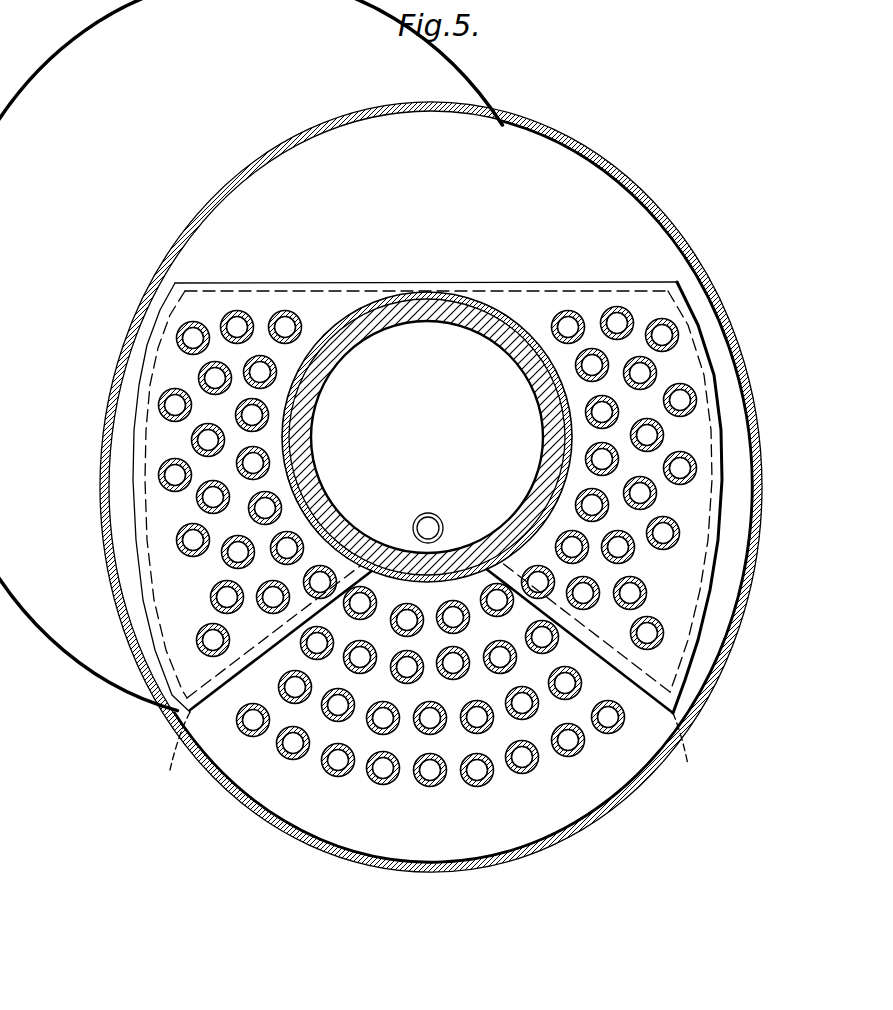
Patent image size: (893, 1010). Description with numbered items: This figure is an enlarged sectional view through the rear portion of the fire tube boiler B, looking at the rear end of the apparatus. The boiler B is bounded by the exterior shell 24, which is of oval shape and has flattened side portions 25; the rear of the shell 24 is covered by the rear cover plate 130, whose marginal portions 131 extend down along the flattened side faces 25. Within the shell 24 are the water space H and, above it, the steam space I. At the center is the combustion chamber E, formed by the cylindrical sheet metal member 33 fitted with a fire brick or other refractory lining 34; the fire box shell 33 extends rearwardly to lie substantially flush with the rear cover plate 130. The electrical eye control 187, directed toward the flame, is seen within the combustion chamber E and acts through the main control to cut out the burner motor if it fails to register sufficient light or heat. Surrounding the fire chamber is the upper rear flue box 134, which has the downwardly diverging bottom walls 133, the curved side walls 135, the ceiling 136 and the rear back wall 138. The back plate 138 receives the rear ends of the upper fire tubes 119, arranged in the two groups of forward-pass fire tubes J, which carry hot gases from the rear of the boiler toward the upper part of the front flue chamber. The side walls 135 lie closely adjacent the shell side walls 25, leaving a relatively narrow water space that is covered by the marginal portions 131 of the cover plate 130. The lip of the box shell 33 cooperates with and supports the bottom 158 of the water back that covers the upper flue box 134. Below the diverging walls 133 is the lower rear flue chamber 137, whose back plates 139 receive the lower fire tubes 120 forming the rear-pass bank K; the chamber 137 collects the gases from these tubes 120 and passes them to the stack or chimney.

The exterior shell 24 is at (229, 180).
The flattened side portions 25 is at (503, 136).
The rear cover plate 130 is at (550, 147).
The ceiling 136 is at (481, 283).
The curved side walls 135 is at (722, 417).
The marginal portions 131 is at (737, 487).
The upper rear flue box 134 is at (700, 527).
The downwardly diverging bottom walls 133 is at (207, 694).
The bottom of the water back 158 is at (175, 760).
The cylindrical sheet metal member 33 is at (560, 387).
The rear back wall 138 is at (583, 433).
The refractory lining 34 is at (306, 416).
The electrical eye control 187 is at (430, 523).
The fire tubes 119 is at (285, 310).
The fire tubes 120 is at (470, 704).
The back plates 139 is at (620, 758).
The lower rear flue chamber 137 is at (550, 804).
The combustion chamber E is at (430, 337).
The steam space I is at (607, 194).
The forward-pass fire tubes J is at (697, 558).
The water space H is at (717, 633).
The boiler B is at (217, 800).
The rear-pass fire tubes K is at (387, 805).